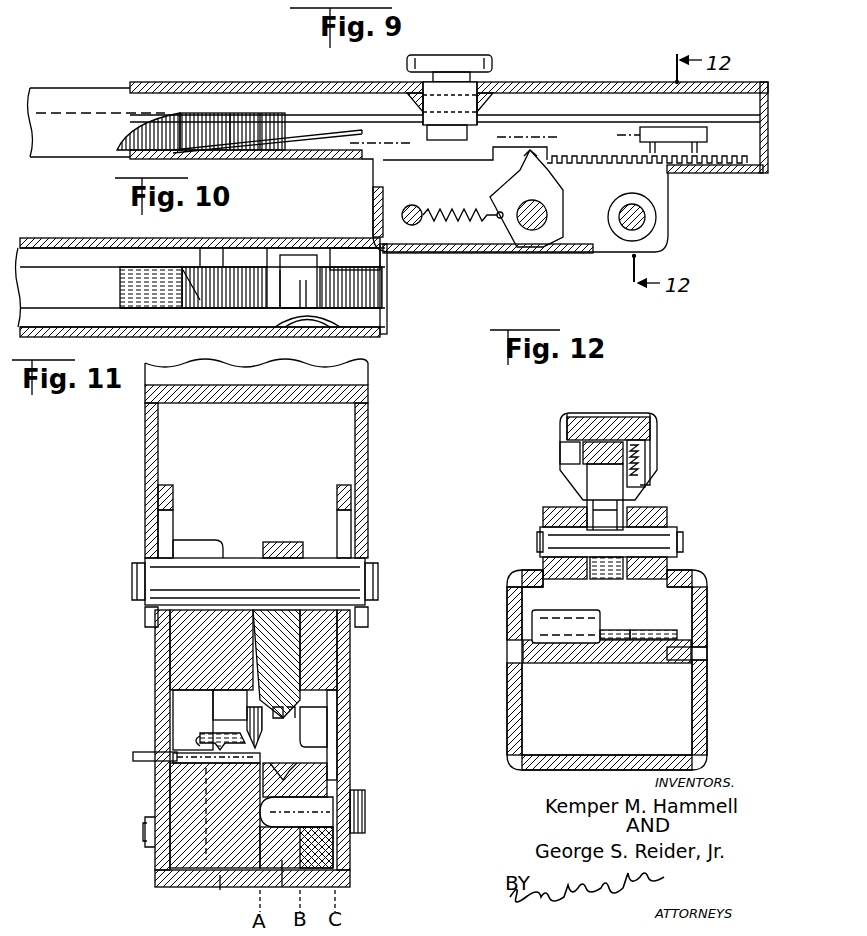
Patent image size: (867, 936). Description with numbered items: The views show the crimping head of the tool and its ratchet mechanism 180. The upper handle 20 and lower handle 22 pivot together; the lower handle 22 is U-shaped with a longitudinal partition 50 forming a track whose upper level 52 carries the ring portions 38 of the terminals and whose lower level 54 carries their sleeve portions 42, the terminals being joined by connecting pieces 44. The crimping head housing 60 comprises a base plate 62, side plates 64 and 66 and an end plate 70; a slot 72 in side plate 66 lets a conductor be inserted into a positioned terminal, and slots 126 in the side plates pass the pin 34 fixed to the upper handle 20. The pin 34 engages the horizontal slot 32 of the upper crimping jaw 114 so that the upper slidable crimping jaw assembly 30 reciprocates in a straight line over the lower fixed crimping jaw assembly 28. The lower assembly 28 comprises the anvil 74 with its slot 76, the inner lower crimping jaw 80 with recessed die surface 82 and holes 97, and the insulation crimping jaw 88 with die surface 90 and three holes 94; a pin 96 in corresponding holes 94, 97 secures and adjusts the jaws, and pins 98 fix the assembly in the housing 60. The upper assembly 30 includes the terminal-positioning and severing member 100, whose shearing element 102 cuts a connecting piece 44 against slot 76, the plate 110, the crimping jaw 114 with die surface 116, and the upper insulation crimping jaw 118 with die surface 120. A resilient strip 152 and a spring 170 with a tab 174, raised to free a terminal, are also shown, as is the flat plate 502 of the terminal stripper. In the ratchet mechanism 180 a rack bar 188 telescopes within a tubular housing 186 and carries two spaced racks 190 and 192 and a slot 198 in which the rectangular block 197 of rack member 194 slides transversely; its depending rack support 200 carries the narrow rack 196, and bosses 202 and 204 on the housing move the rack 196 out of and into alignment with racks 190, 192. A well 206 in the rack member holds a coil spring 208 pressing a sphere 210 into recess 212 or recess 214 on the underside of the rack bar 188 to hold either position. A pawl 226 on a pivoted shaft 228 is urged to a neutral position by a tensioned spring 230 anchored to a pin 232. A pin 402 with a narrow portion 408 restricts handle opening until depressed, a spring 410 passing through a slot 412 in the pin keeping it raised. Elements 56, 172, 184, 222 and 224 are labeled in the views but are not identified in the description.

In FIG. 11, the upper handle 20 is at (145, 422).
In FIG. 12, the lower handle 22 is at (705, 610).
In FIG. 11, the lower fixed crimping jaw assembly 28 is at (375, 805).
In FIG. 11, the upper vertically slidable crimping jaw assembly 30 is at (375, 670).
In FIG. 11, the horizontal slot 32 is at (282, 542).
In FIG. 11, the pin 34 is at (238, 565).
In FIG. 12, the ring portions 38 is at (660, 630).
In FIG. 12, the sleeve portions 42 is at (560, 622).
In FIG. 12, the connecting pieces 44 is at (617, 630).
In FIG. 12, the longitudinal partition 50 is at (608, 664).
In FIG. 12, the upper level 52 is at (645, 665).
In FIG. 12, the lower level 54 is at (555, 663).
In FIG. 12, the chamber 56 is at (614, 739).
In FIG. 11, the housing 60 is at (150, 672).
In FIG. 11, the base plate 62 is at (195, 876).
In FIG. 11, the side plate 64 is at (168, 485).
In FIG. 11, the side plate 66 is at (342, 485).
In FIG. 11, the end plate 70 is at (198, 540).
In FIG. 11, the slot 72 is at (340, 727).
In FIG. 11, the anvil 74 is at (185, 862).
In FIG. 11, the slot 76 is at (217, 898).
In FIG. 11, the inner lower crimping jaw 80 is at (280, 888).
In FIG. 11, the recessed die surface 82 is at (262, 790).
In FIG. 11, the insulation crimping jaw 88 is at (325, 862).
In FIG. 11, the recessed die surface 90 is at (320, 773).
In FIG. 11, the holes 94 is at (340, 840).
In FIG. 11, the pin 96 is at (366, 810).
In FIG. 11, the holes 97 is at (268, 823).
In FIG. 11, the pins 98 is at (142, 832).
In FIG. 11, the terminal-positioning and severing member 100 is at (175, 643).
In FIG. 11, the shearing element 102 is at (228, 705).
In FIG. 11, the plate 110 is at (252, 636).
In FIG. 11, the upper crimping jaw 114 is at (290, 542).
In FIG. 11, the recessed die surface 116 is at (277, 728).
In FIG. 11, the upper insulation crimping jaw 118 is at (330, 628).
In FIG. 11, the die surface 120 is at (328, 707).
In FIG. 11, the slots 126 is at (158, 520).
In FIG. 11, the resilient strip 152 is at (185, 705).
In FIG. 11, the spring 170 is at (227, 814).
In FIG. 11, the lower block 172 is at (195, 770).
In FIG. 11, the tab 174 is at (133, 752).
In FIG. 9, the ratchet mechanism 180 is at (592, 80).
In FIG. 12, the ratchet mechanism 180 is at (557, 412).
In FIG. 9, the housing 184 is at (642, 226).
In FIG. 12, the housing 184 is at (538, 532).
In FIG. 9, the tubular housing 186 is at (210, 68).
In FIG. 10, the tubular housing 186 is at (95, 246).
In FIG. 12, the tubular housing 186 is at (652, 414).
In FIG. 9, the rack bar 188 is at (72, 84).
In FIG. 10, the rack bar 188 is at (38, 252).
In FIG. 12, the rack bar 188 is at (595, 425).
In FIG. 9, the rack 190 is at (626, 165).
In FIG. 10, the rack 190 is at (226, 247).
In FIG. 12, the rack 190 is at (580, 468).
In FIG. 9, the rack 192 is at (726, 173).
In FIG. 10, the rack 192 is at (378, 285).
In FIG. 9, the rack member 194 is at (666, 124).
In FIG. 10, the rack member 194 is at (365, 230).
In FIG. 9, the rack 196 is at (656, 165).
In FIG. 10, the rack 196 is at (285, 255).
In FIG. 12, the rack 196 is at (645, 495).
In FIG. 9, the rectangular block 197 is at (702, 136).
In FIG. 12, the rectangular block 197 is at (570, 430).
In FIG. 9, the slot 198 is at (640, 135).
In FIG. 9, the rack support 200 is at (682, 170).
In FIG. 12, the boss 202 is at (562, 450).
In FIG. 10, the boss 204 is at (222, 333).
In FIG. 12, the well 206 is at (647, 480).
In FIG. 12, the coil spring 208 is at (647, 453).
In FIG. 12, the sphere 210 is at (652, 440).
In FIG. 10, the recess 212 is at (300, 333).
In FIG. 12, the recess 212 is at (637, 430).
In FIG. 10, the recess 214 is at (300, 290).
In FIG. 12, the recess 214 is at (618, 412).
In FIG. 10, the end piece 222 is at (350, 333).
In FIG. 9, the knurled piece 224 is at (290, 82).
In FIG. 10, the knurled piece 224 is at (172, 262).
In FIG. 9, the pawl 226 is at (548, 190).
In FIG. 12, the pawl 226 is at (600, 490).
In FIG. 9, the shaft 228 is at (534, 232).
In FIG. 9, the spring 230 is at (460, 199).
In FIG. 9, the pin 232 is at (409, 206).
In FIG. 9, the pin 402 is at (444, 58).
In FIG. 9, the narrow portion 408 is at (550, 86).
In FIG. 9, the spring 410 is at (336, 160).
In FIG. 9, the slot 412 is at (403, 92).
In FIG. 11, the flat horizontal plate 502 is at (211, 728).